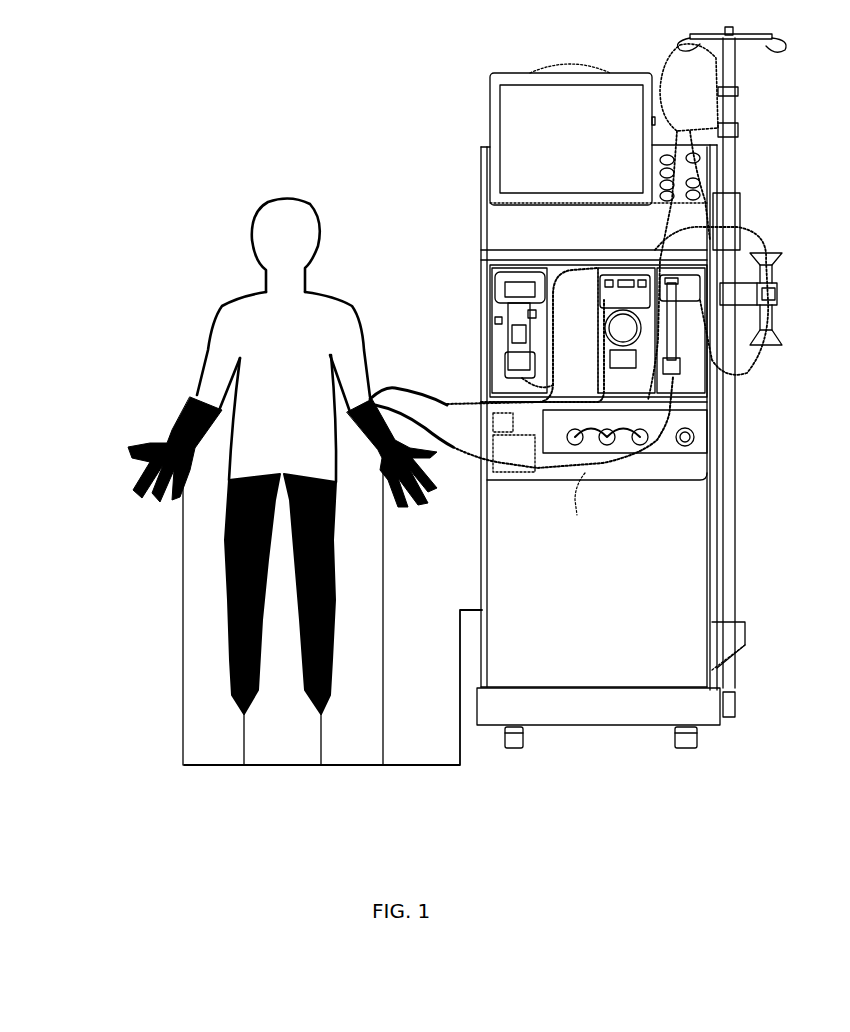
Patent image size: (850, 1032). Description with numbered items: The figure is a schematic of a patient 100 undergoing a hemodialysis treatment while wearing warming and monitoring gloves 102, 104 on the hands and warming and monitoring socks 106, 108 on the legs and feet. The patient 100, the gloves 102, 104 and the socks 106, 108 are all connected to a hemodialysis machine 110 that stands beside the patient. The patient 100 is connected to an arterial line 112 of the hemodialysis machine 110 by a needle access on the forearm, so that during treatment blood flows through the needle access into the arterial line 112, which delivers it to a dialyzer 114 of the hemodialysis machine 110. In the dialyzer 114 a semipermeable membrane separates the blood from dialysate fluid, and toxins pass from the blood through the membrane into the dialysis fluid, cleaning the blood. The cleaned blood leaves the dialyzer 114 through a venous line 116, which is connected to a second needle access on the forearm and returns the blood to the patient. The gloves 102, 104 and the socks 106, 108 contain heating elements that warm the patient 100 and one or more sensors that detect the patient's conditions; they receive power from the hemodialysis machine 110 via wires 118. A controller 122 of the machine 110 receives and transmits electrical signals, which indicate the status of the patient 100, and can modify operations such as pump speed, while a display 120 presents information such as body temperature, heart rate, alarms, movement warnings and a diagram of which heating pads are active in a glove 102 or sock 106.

The patient 100 is at (266, 178).
The warming and monitoring glove 102 is at (185, 406).
The warming and monitoring glove 104 is at (425, 500).
The warming and monitoring sock 106 is at (228, 580).
The warming and monitoring sock 108 is at (333, 593).
The hemodialysis machine 110 is at (470, 57).
The arterial line 112 is at (447, 403).
The dialyzer 114 is at (775, 317).
The venous line 116 is at (577, 500).
The wires 118 is at (208, 764).
The display 120 is at (508, 153).
The controller 122 is at (503, 467).